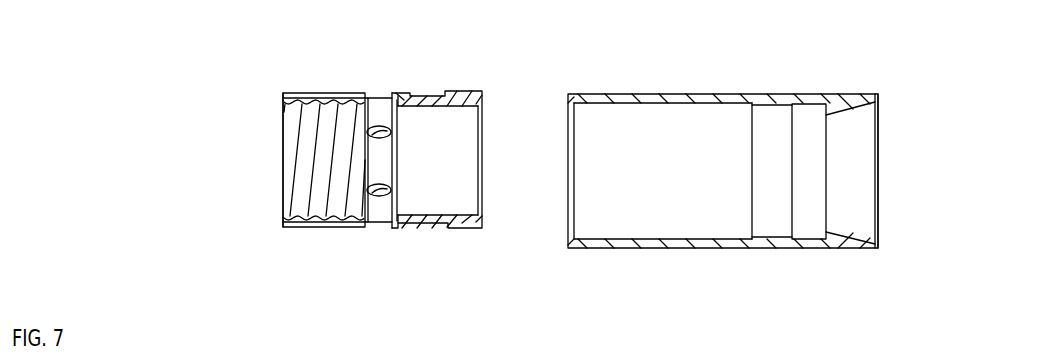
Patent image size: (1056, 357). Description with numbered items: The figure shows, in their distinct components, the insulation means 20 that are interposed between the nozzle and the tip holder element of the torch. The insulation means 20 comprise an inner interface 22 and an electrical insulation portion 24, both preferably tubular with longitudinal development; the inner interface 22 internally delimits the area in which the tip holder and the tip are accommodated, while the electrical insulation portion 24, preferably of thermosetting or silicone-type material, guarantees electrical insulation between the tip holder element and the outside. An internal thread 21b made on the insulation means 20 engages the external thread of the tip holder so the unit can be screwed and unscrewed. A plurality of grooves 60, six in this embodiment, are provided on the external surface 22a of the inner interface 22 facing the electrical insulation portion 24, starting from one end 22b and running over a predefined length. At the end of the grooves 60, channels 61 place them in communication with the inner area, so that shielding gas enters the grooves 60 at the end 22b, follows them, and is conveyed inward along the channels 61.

The insulation means 20 is at (750, 44).
The internal thread 21b is at (293, 140).
The inner interface 22 is at (184, 199).
The external surface 22a is at (408, 77).
The end of the inner interface 22b is at (267, 236).
The electrical insulation portion 24 is at (929, 253).
The grooves 60 is at (313, 97).
The channels 61 is at (380, 98).